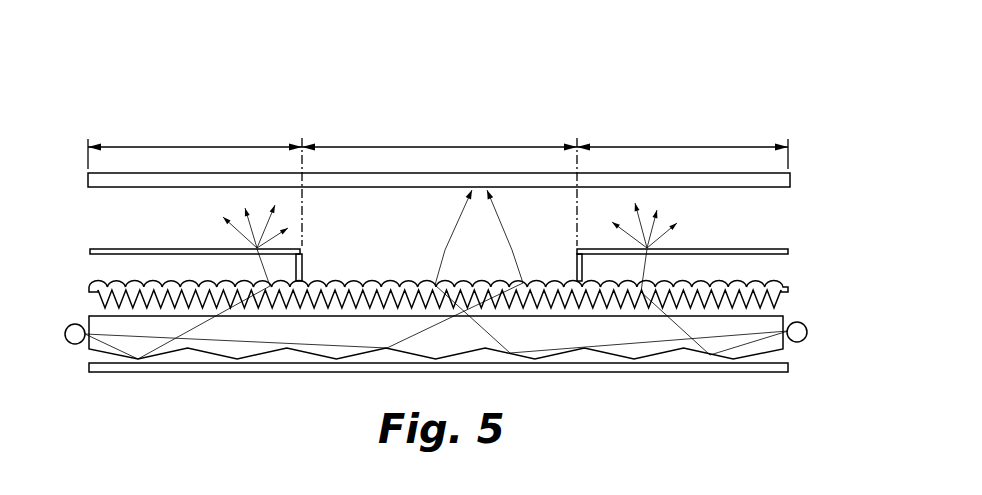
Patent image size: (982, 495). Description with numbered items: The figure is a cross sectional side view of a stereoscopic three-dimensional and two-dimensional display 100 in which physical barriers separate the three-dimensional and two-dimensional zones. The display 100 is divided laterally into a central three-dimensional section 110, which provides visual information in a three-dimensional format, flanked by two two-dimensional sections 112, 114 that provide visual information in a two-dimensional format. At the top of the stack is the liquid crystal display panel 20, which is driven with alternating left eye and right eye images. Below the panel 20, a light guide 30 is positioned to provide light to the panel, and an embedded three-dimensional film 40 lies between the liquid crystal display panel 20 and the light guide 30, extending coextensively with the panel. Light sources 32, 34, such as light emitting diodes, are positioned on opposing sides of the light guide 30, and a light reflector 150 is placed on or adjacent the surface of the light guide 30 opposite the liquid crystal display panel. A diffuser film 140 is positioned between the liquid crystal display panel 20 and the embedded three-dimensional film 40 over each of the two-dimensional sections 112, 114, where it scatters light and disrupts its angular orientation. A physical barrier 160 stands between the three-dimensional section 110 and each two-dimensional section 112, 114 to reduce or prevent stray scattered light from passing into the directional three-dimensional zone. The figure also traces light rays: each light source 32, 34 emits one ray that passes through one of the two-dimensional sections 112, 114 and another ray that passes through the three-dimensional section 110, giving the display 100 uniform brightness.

The stereoscopic 3D display and 2D display 100 is at (672, 72).
The 2D section 112 is at (203, 143).
The 3D section 110 is at (430, 143).
The 2D section 114 is at (693, 143).
The liquid crystal display panel 20 is at (778, 182).
The diffuser film 140 is at (153, 247).
The physical barrier 160 is at (303, 257).
The embedded 3D film 40 is at (97, 282).
The light guide 30 is at (647, 350).
The light reflector 150 is at (735, 370).
The light source 34 is at (72, 327).
The light source 32 is at (801, 326).